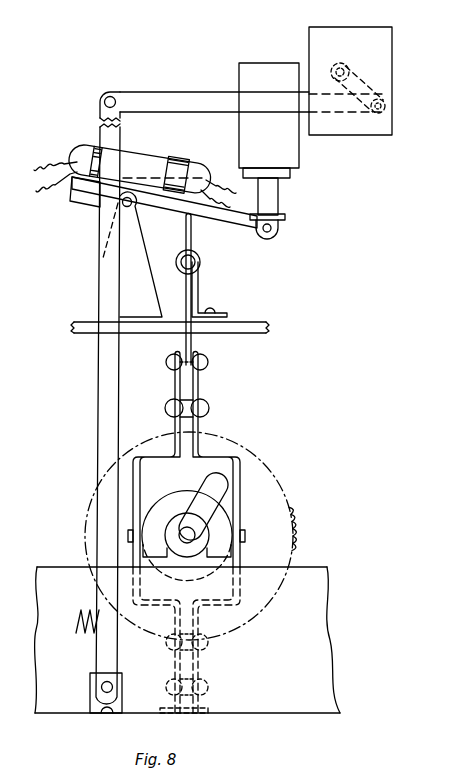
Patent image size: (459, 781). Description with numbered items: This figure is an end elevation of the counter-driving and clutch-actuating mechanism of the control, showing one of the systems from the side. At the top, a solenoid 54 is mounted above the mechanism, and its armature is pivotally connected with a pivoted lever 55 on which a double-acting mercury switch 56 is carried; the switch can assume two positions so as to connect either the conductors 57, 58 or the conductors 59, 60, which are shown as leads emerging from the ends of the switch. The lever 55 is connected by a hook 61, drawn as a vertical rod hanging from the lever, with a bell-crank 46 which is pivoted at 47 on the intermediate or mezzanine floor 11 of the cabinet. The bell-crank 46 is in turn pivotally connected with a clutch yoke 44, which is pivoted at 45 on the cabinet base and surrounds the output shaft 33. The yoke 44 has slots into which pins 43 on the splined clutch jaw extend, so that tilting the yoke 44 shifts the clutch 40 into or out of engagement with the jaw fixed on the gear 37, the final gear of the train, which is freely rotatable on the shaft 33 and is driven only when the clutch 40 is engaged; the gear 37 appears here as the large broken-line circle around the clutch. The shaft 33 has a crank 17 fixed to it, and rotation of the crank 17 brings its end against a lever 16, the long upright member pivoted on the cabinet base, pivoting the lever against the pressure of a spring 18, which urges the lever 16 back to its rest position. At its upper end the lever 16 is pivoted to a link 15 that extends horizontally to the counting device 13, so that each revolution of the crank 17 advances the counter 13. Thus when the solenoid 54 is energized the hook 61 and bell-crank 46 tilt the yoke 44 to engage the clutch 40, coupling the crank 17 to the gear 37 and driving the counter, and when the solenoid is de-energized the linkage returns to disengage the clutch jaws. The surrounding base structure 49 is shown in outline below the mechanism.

The intermediate floor 11 is at (250, 328).
The counting device 13 is at (358, 17).
The link 15 is at (149, 104).
The lever 16 is at (108, 410).
The crank 17 is at (217, 492).
The spring 18 is at (77, 630).
The shaft 33 is at (183, 523).
The gear 37 is at (277, 497).
The clutch 40 is at (148, 508).
The pins 43 is at (246, 537).
The yoke 44 is at (236, 462).
The pivot 45 is at (207, 686).
The bell-crank 46 is at (190, 297).
The pivot 47 is at (202, 266).
The base block 49 is at (307, 664).
The solenoid 54 is at (243, 73).
The pivoted lever 55 is at (225, 224).
The double-acting mercury switch 56 is at (144, 163).
The conductor 57 is at (70, 152).
The conductor 58 is at (70, 176).
The conductor 59 is at (204, 191).
The conductor 60 is at (214, 201).
The hook 61 is at (186, 239).